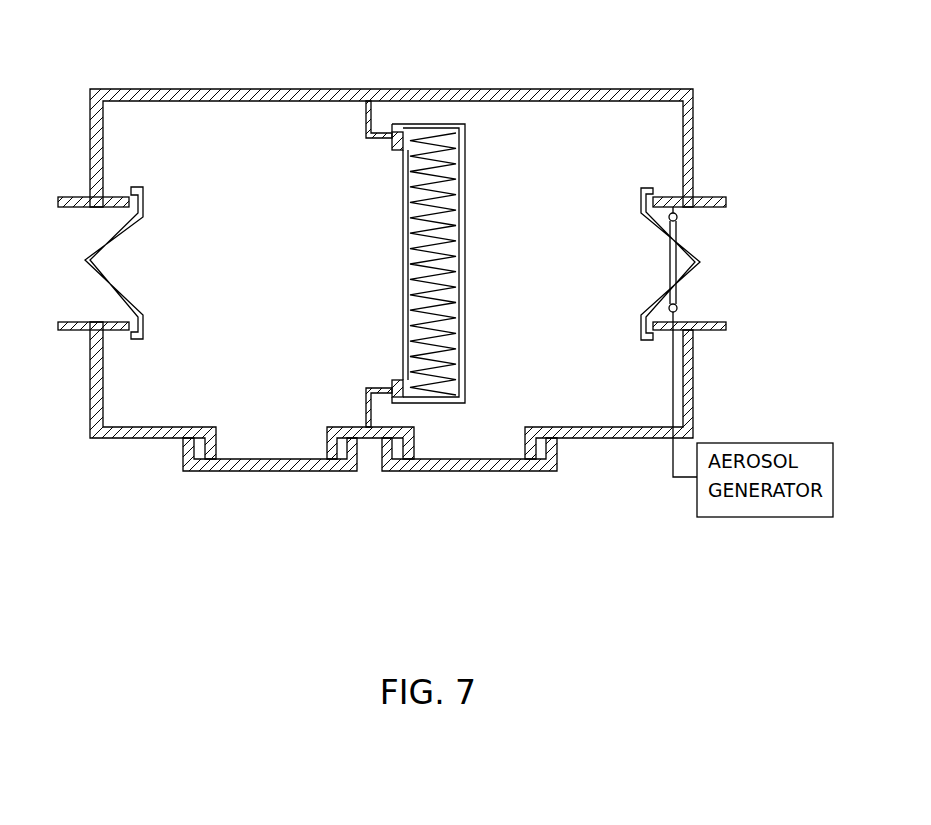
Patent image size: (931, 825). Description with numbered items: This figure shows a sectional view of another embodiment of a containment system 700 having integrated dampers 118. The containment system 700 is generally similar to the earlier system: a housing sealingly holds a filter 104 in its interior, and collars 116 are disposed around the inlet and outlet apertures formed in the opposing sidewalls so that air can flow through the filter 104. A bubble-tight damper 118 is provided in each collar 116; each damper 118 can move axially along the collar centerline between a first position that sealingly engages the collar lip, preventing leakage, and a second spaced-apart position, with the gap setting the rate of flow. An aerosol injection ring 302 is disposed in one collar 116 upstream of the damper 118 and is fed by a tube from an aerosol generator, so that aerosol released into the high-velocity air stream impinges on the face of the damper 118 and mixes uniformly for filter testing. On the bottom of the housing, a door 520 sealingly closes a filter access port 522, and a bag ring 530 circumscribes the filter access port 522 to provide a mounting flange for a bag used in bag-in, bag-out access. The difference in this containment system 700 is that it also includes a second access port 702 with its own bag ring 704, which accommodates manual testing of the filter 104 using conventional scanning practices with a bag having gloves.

The containment system 700 is at (250, 55).
The collar 116 is at (75, 197).
The damper 118 is at (103, 242).
The filter 104 is at (466, 170).
The aerosol injection ring 302 is at (675, 203).
The second access port 702 is at (297, 432).
The bag ring 704 is at (218, 440).
The filter access port 522 is at (482, 447).
The bag ring 530 is at (523, 440).
The door 520 is at (470, 472).